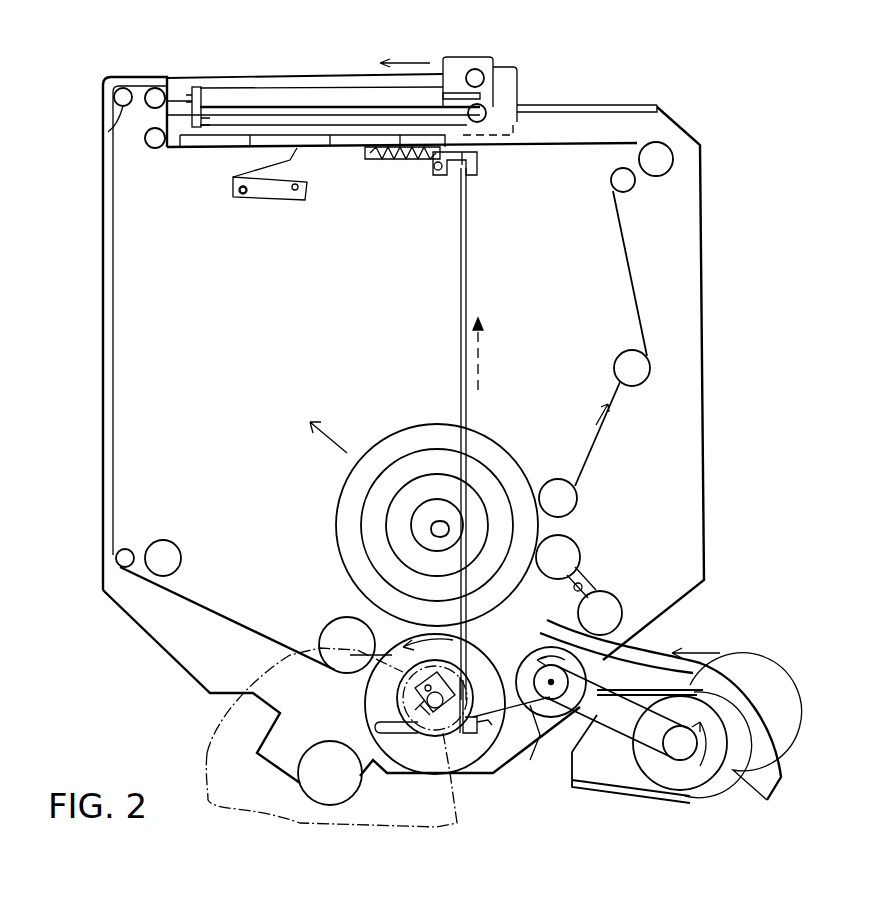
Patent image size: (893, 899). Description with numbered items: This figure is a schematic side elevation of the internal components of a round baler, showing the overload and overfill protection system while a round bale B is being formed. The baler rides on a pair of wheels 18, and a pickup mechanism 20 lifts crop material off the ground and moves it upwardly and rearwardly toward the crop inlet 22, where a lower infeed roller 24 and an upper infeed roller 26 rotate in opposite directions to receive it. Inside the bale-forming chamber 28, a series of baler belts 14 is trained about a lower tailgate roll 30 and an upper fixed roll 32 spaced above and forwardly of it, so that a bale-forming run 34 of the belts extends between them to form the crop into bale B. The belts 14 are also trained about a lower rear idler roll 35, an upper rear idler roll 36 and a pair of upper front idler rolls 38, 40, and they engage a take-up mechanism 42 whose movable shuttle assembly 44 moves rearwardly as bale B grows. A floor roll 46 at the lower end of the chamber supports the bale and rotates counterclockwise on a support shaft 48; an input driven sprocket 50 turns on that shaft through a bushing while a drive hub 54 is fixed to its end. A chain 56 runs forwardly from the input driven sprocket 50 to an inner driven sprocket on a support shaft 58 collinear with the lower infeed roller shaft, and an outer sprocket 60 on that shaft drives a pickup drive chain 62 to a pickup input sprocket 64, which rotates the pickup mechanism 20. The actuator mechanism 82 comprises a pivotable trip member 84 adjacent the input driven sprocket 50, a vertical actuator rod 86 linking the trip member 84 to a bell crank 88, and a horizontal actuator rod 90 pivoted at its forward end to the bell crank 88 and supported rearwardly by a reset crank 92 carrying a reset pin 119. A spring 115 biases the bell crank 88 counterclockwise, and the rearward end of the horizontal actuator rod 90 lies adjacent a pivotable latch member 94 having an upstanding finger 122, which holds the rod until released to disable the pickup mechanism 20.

The baler belts 14 is at (103, 312).
The wheels 18 is at (207, 753).
The pickup mechanism 20 is at (740, 805).
The crop inlet 22 is at (616, 662).
The lower infeed roller 24 is at (548, 745).
The upper infeed roller 26 is at (618, 594).
The bale-forming chamber 28 is at (371, 336).
The lower tailgate roll 30 is at (330, 628).
The upper fixed roll 32 is at (551, 479).
The bale-forming run 34 is at (340, 495).
The lower rear idler roll 35 is at (128, 547).
The upper rear idler roll 36 is at (108, 132).
The upper front idler roll 38 is at (631, 190).
The upper front idler roll 40 is at (638, 158).
The take-up mechanism 42 is at (437, 49).
The shuttle assembly 44 is at (529, 61).
The floor roll 46 is at (475, 768).
The support shaft 48 is at (452, 735).
The input driven sprocket 50 is at (429, 737).
The drive hub 54 is at (397, 700).
The chain 56 is at (535, 745).
The support shaft 58 is at (551, 680).
The outer sprocket 60 is at (507, 720).
The pickup drive chain 62 is at (640, 690).
The pickup input sprocket 64 is at (686, 770).
The actuator mechanism 82 is at (516, 182).
The trip member 84 is at (401, 750).
The vertical actuator rod 86 is at (466, 283).
The bell crank 88 is at (449, 176).
The horizontal actuator rod 90 is at (325, 150).
The reset crank 92 is at (268, 200).
The latch member 94 is at (163, 148).
The spring 115 is at (400, 160).
The reset pin 119 is at (243, 198).
The upstanding finger 122 is at (207, 97).
The round bale B is at (400, 440).